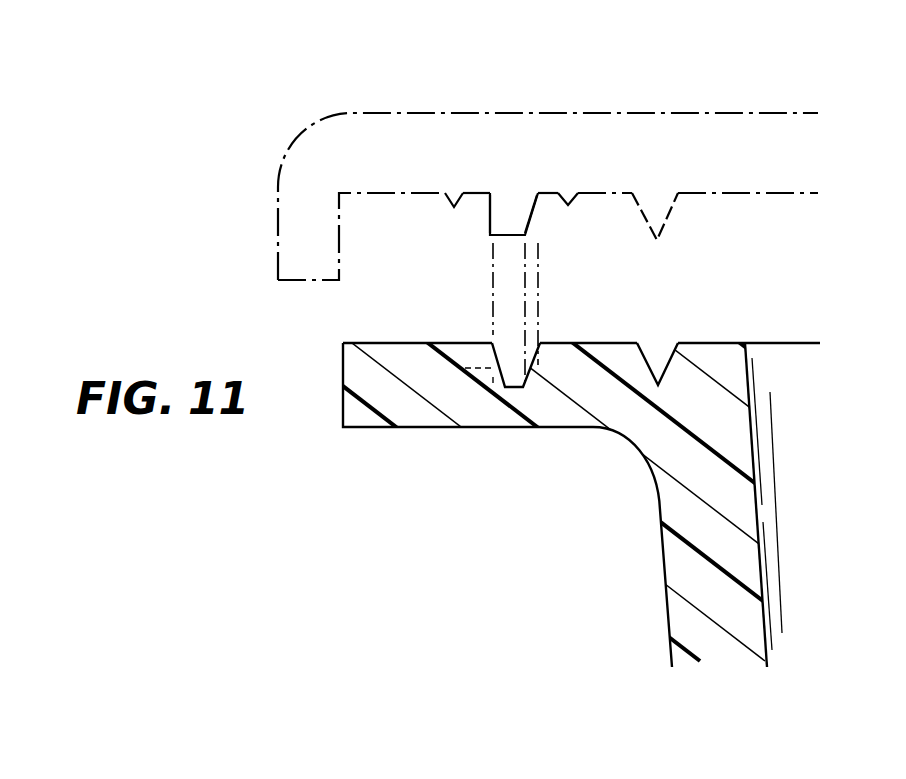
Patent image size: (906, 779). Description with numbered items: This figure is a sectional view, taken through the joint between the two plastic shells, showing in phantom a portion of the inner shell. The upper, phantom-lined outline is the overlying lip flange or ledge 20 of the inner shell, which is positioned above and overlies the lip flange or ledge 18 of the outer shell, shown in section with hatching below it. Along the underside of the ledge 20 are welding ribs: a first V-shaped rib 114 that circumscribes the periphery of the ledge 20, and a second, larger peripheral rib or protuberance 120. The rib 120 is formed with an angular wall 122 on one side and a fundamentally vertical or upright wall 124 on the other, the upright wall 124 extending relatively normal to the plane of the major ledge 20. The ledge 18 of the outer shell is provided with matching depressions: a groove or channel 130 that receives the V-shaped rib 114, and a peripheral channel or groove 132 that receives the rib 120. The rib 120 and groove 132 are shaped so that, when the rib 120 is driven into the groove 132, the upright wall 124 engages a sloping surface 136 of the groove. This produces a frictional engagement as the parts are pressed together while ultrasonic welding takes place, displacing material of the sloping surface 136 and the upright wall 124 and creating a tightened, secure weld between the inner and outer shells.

The lip flange or ledge 20 is at (387, 105).
The lip flange or ledge 18 is at (384, 430).
The peripheral rib or protuberance 120 is at (513, 207).
The angular wall 122 is at (540, 212).
The vertical wall 124 is at (490, 215).
The V-shaped rib 114 is at (655, 195).
The groove or channel 130 is at (657, 352).
The peripheral channel or groove 132 is at (523, 428).
The sloping surface 136 is at (492, 368).